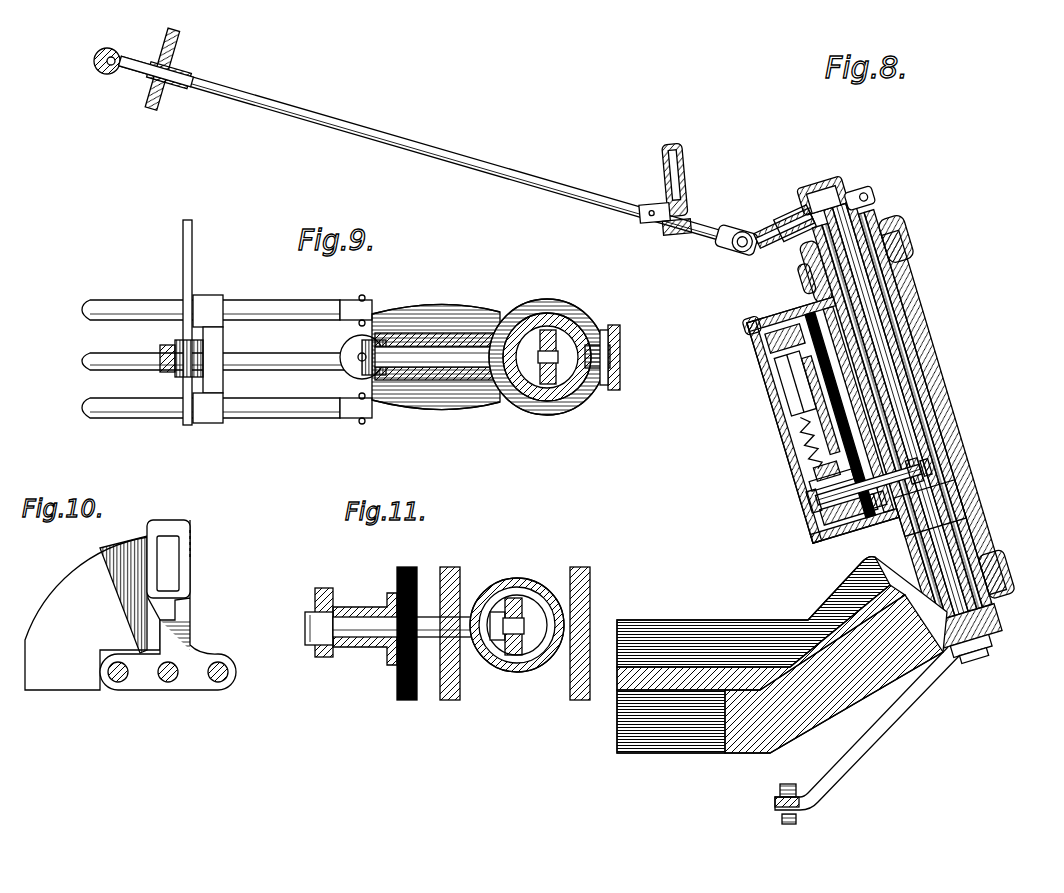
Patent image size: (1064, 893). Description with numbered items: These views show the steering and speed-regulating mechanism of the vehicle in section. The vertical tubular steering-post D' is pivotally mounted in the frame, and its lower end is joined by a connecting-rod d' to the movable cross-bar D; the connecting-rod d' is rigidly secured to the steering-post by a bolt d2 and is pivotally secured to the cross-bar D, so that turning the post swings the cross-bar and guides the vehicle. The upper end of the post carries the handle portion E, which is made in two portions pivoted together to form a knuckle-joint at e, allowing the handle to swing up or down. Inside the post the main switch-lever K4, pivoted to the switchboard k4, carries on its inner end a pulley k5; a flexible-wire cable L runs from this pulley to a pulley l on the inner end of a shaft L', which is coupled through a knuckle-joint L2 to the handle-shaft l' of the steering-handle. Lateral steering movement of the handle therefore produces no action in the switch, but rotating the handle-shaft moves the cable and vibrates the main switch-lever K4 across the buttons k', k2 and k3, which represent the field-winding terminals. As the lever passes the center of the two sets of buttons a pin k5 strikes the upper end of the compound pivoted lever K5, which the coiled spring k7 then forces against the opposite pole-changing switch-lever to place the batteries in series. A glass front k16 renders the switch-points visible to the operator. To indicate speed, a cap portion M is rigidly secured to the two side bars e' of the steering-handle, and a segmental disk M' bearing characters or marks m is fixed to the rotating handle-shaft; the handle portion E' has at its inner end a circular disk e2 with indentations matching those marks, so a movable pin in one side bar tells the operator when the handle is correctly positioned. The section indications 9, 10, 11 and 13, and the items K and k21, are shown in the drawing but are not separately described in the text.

In FIG. 8, the handle-shaft l' is at (420, 148).
In FIG. 9, the handle-shaft l' is at (213, 349).
In FIG. 10, the handle-shaft l' is at (168, 707).
In FIG. 8, the handle portion E' is at (102, 78).
In FIG. 8, the circular disk e2 is at (158, 102).
In FIG. 8, the section line 13 is at (96, 60).
In FIG. 8, the cap portion M is at (663, 190).
In FIG. 9, the cap portion M is at (170, 379).
In FIG. 10, the cap portion M is at (135, 629).
In FIG. 9, the segmental disk M' is at (168, 322).
In FIG. 10, the characters or marks m is at (143, 557).
In FIG. 8, the section line 10 is at (617, 245).
In FIG. 8, the knuckle-joint L2 is at (733, 250).
In FIG. 9, the knuckle-joint L2 is at (342, 385).
In FIG. 8, the shaft L' is at (775, 215).
In FIG. 9, the shaft L' is at (450, 390).
In FIG. 8, the handle portion E is at (792, 215).
In FIG. 9, the handle portion E is at (446, 352).
In FIG. 8, the flexible-wire cable L is at (900, 409).
In FIG. 9, the flexible-wire cable L is at (550, 316).
In FIG. 11, the flexible-wire cable L is at (517, 654).
In FIG. 8, the pulley l is at (835, 189).
In FIG. 9, the pulley l is at (590, 378).
In FIG. 8, the section line 9 is at (866, 199).
In FIG. 8, the casing / bar K is at (790, 335).
In FIG. 11, the casing / bar K is at (397, 680).
In FIG. 8, the button k3 is at (770, 320).
In FIG. 8, the button k2 is at (743, 330).
In FIG. 8, the button k' is at (757, 378).
In FIG. 8, the pulley k5 is at (773, 377).
In FIG. 11, the pulley k5 is at (530, 603).
In FIG. 8, the coiled spring k7 is at (797, 400).
In FIG. 8, the compound pivoted lever K5 is at (800, 410).
In FIG. 8, the main switch-lever K4 is at (813, 468).
In FIG. 11, the main switch-lever K4 is at (318, 592).
In FIG. 11, the switchboard k4 is at (350, 628).
In FIG. 8, the glass front k16 is at (810, 527).
In FIG. 8, the lug k21 is at (840, 512).
In FIG. 8, the section line 11 is at (927, 457).
In FIG. 8, the vertical tubular steering-post D' is at (971, 508).
In FIG. 9, the vertical tubular steering-post D' is at (547, 381).
In FIG. 11, the vertical tubular steering-post D' is at (517, 607).
In FIG. 8, the bolt d2 is at (990, 627).
In FIG. 8, the connecting-rod d' is at (867, 728).
In FIG. 8, the cross-bar D is at (782, 690).
In FIG. 9, the side bars e' is at (211, 363).
In FIG. 10, the side bars e' is at (169, 699).
In FIG. 9, the knuckle-joint e is at (364, 358).